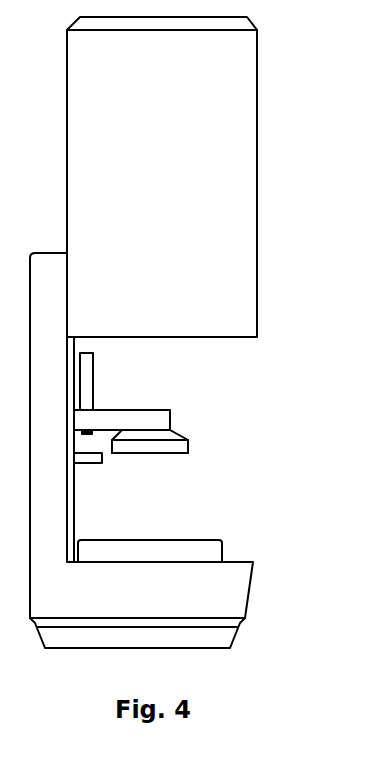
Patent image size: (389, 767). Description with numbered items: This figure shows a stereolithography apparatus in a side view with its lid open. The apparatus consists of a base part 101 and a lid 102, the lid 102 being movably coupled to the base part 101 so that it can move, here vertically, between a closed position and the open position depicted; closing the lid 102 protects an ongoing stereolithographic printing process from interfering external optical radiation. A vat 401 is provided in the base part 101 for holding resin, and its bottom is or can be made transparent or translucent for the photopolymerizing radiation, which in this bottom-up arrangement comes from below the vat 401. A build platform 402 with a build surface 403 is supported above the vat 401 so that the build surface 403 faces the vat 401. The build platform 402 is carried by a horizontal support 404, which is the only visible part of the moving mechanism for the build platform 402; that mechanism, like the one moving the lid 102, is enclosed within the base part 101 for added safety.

The base part 101 is at (247, 589).
The lid 102 is at (245, 197).
The vat 401 is at (215, 541).
The build platform 402 is at (188, 445).
The build surface 403 is at (157, 455).
The horizontal support 404 is at (158, 408).